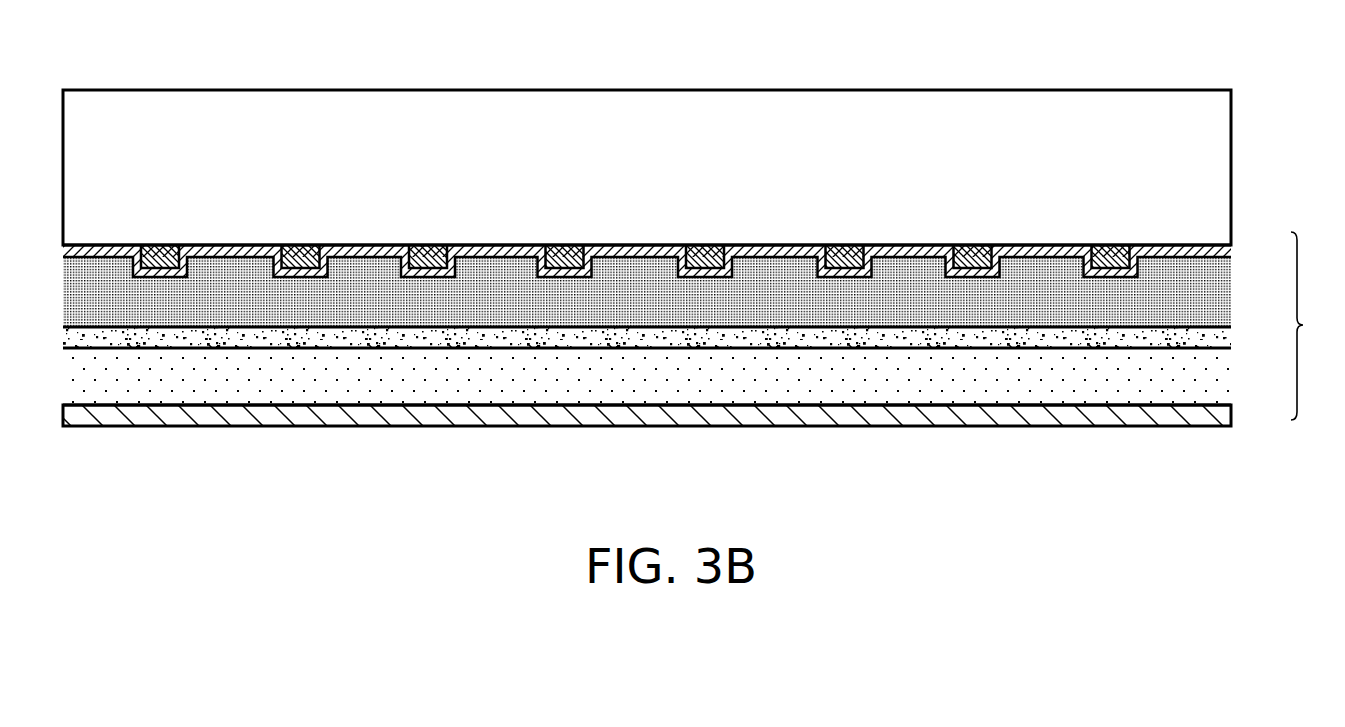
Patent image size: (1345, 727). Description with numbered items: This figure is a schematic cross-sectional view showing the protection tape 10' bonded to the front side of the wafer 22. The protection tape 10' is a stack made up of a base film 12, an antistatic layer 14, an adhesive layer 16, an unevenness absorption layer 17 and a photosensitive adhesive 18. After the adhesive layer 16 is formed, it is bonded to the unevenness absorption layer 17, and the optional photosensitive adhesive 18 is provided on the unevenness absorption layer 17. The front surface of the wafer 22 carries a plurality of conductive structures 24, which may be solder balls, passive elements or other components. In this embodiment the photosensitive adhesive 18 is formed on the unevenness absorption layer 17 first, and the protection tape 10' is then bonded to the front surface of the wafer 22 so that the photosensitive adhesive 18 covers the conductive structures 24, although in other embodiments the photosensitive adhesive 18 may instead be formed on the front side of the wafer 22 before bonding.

The protection tape 10' is at (1318, 326).
The base film 12 is at (1226, 375).
The antistatic layer 14 is at (1226, 416).
The adhesive layer 16 is at (1226, 338).
The unevenness absorption layer 17 is at (1226, 297).
The photosensitive adhesive 18 is at (1228, 250).
The wafer 22 is at (1224, 168).
The conductive structures 24 is at (1112, 246).